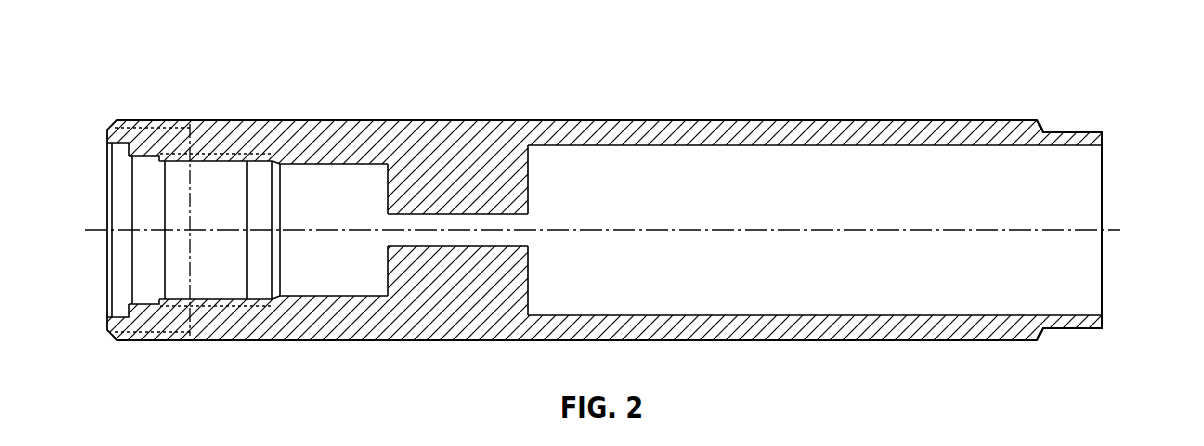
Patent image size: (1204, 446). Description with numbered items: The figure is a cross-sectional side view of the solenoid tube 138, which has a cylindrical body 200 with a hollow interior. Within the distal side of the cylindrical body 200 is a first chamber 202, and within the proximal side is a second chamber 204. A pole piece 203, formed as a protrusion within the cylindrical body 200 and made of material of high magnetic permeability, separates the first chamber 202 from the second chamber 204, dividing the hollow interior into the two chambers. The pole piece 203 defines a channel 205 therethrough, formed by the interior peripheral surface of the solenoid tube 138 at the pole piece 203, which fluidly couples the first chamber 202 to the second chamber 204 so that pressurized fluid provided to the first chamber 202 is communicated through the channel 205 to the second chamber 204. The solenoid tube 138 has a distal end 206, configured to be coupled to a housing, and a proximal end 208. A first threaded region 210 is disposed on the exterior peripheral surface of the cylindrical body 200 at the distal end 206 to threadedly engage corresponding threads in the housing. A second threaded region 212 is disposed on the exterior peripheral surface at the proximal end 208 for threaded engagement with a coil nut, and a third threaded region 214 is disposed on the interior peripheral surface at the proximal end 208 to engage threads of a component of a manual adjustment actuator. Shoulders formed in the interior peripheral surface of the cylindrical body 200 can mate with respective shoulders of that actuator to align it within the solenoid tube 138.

The solenoid tube 138 is at (130, 60).
The cylindrical body 200 is at (697, 133).
The first chamber 202 is at (771, 159).
The pole piece 203 is at (477, 165).
The second chamber 204 is at (351, 197).
The channel 205 is at (422, 219).
The distal end 206 is at (989, 107).
The proximal end 208 is at (182, 83).
The first threaded region 210 is at (1089, 129).
The second threaded region 212 is at (130, 117).
The third threaded region 214 is at (236, 150).